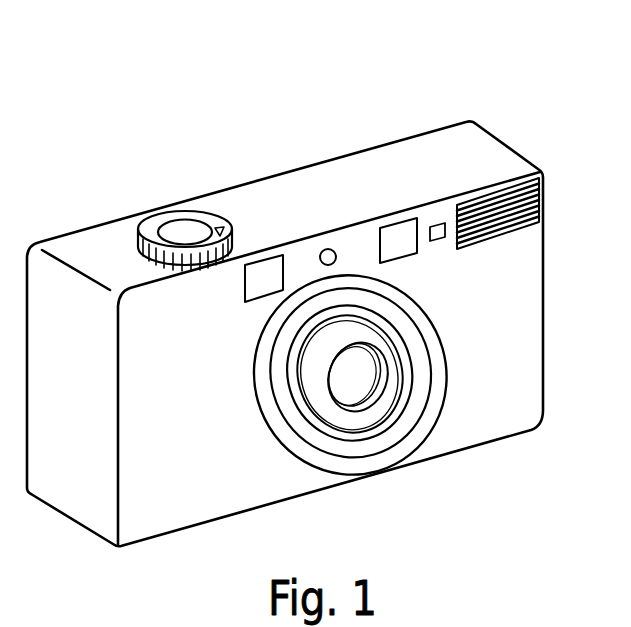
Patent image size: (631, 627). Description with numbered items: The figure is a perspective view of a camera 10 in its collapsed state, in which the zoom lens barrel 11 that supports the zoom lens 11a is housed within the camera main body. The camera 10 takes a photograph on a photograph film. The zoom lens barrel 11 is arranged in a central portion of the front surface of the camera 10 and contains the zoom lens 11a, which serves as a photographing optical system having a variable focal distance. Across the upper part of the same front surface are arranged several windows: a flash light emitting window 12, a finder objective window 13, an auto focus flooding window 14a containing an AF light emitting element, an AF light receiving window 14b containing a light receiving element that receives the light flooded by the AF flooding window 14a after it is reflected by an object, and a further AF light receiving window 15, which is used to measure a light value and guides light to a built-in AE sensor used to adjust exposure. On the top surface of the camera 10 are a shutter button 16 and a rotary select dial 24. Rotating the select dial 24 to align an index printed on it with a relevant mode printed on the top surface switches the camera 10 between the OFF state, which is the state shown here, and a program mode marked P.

The camera 10 is at (433, 110).
The zoom lens barrel 11 is at (447, 377).
The zoom lens 11a is at (343, 382).
The flash light emitting window 12 is at (508, 208).
The finder objective window 13 is at (437, 226).
The AF flooding window 14a is at (398, 235).
The AF light receiving window 14b is at (267, 273).
The AF light receiving window 15 is at (330, 249).
The shutter button 16 is at (182, 233).
The rotary select dial 24 is at (147, 230).